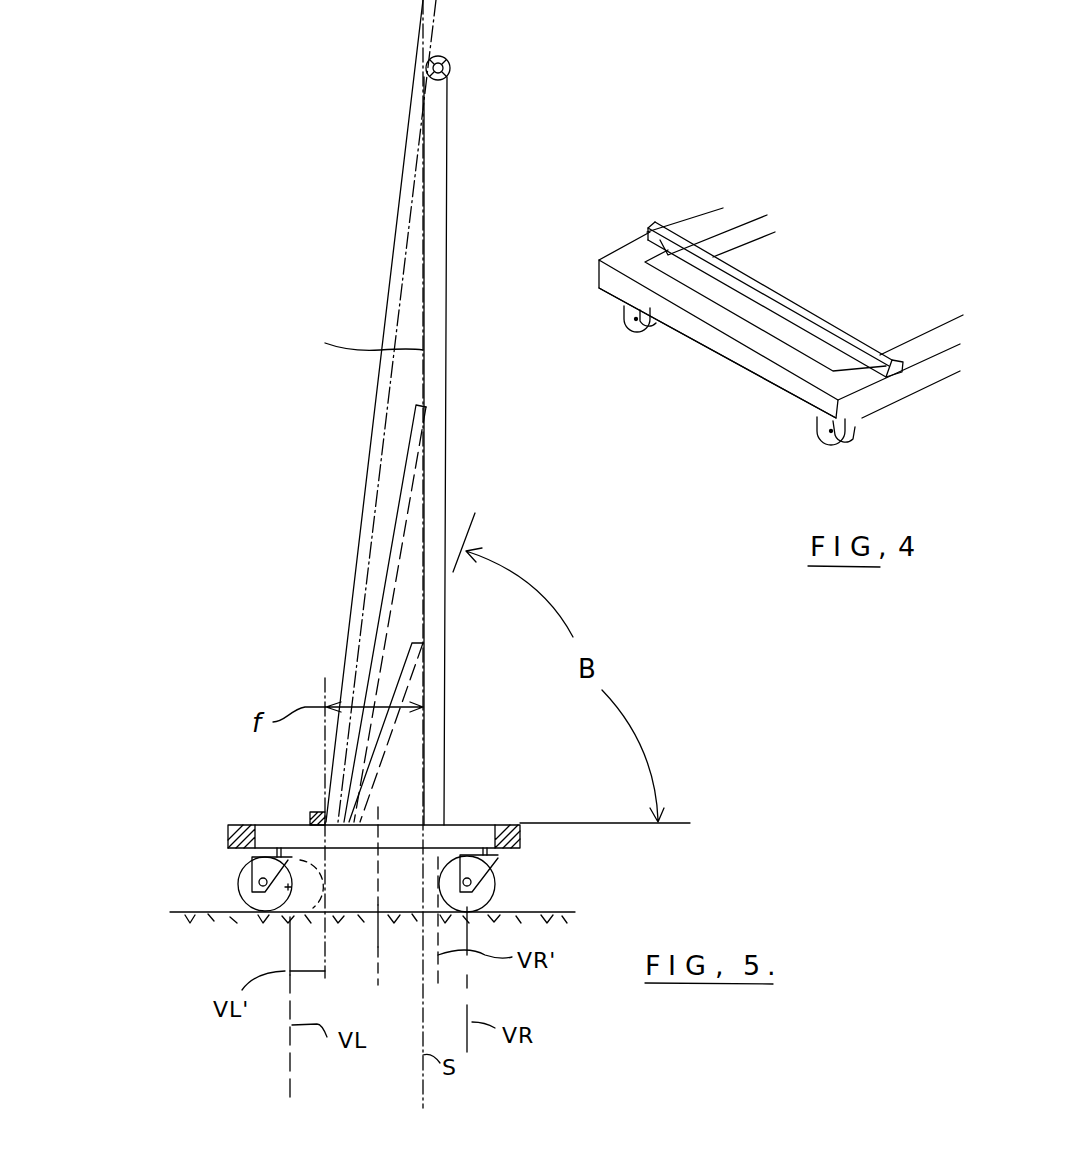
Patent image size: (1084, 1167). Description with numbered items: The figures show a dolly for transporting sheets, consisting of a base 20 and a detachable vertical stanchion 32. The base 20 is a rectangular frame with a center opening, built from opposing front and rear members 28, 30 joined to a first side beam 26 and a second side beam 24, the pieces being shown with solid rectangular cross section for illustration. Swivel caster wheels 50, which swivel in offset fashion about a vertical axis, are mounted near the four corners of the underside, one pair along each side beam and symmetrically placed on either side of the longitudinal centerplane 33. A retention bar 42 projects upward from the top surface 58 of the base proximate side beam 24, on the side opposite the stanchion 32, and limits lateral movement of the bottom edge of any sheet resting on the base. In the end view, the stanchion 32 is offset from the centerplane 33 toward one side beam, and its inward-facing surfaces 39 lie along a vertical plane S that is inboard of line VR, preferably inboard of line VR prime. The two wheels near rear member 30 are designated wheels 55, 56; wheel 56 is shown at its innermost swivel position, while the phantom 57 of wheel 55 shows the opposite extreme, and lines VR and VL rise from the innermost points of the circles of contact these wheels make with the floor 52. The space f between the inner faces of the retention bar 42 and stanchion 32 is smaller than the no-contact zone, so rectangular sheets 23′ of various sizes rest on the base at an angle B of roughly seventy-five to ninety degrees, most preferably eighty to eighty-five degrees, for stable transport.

In FIG. 4, the base 20 is at (755, 397).
In FIG. 5, the base 20 is at (217, 843).
In FIG. 5, the rectangular sheet 23′ is at (423, 25).
In FIG. 4, the second side beam 24 is at (693, 337).
In FIG. 5, the first side beam 26 is at (520, 835).
In FIG. 4, the front member 28 is at (918, 387).
In FIG. 4, the rear member 30 is at (648, 236).
In FIG. 5, the rear member 30 is at (470, 837).
In FIG. 5, the stanchion 32 is at (458, 445).
In FIG. 5, the longitudinal centerplane 33 is at (378, 952).
In FIG. 5, the inward-facing surfaces 39 is at (353, 335).
In FIG. 4, the retention bar 42 is at (775, 287).
In FIG. 5, the retention bar 42 is at (317, 822).
In FIG. 4, the swivel caster wheels 50 is at (848, 445).
In FIG. 5, the floor 52 is at (175, 910).
In FIG. 5, the wheel 55 is at (240, 875).
In FIG. 5, the wheel 56 is at (498, 888).
In FIG. 5, the phantom of wheel 55 57 is at (317, 867).
In FIG. 4, the top surface of the base 58 is at (922, 342).